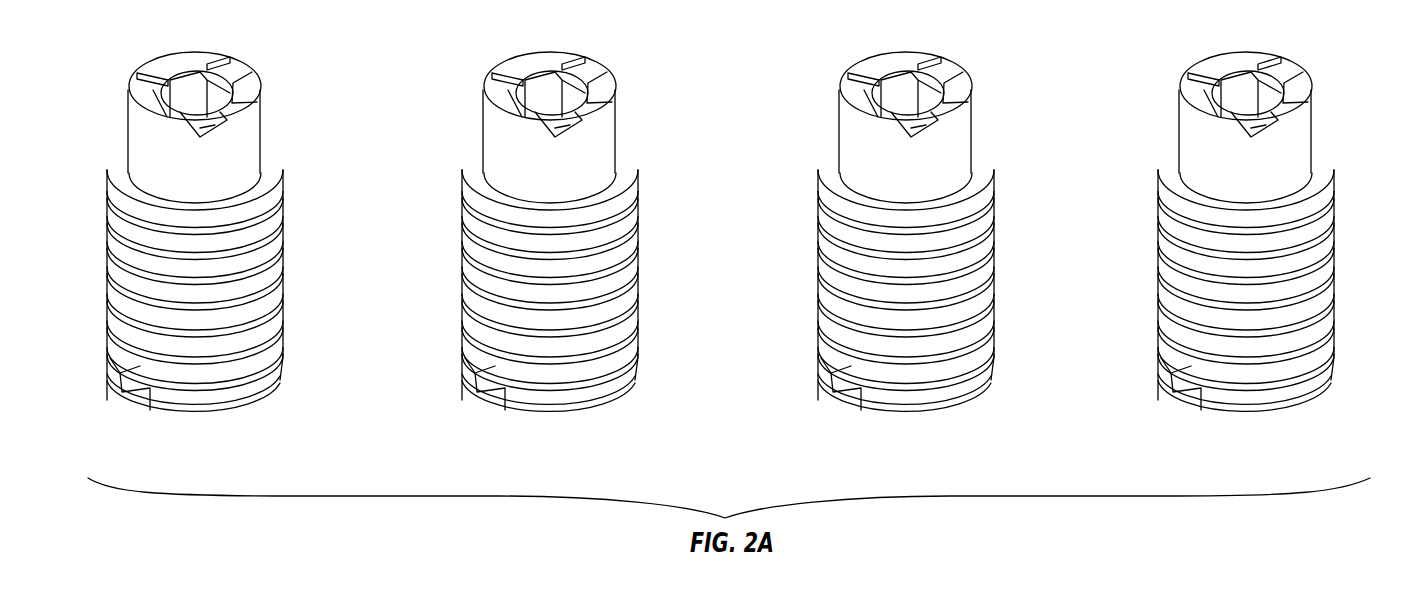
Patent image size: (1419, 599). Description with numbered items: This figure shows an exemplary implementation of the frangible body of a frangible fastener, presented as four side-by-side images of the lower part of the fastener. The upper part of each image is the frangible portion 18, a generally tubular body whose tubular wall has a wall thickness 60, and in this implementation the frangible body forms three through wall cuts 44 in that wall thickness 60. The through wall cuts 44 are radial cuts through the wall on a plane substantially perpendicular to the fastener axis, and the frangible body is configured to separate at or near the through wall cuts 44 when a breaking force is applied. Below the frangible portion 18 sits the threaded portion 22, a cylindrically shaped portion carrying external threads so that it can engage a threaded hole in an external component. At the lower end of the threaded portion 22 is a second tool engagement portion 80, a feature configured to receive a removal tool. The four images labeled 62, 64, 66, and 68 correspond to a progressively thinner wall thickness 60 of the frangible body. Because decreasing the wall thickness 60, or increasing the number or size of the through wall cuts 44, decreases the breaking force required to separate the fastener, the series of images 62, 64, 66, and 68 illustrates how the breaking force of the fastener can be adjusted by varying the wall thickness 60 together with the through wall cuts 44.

The frangible portion 18 is at (265, 66).
The wall thickness 60 is at (247, 101).
The through wall cuts 44 is at (212, 126).
The threaded portion 22 is at (284, 316).
The second tool engagement portion 80 is at (150, 397).
The image of frangible body with first wall thickness 62 is at (241, 424).
The image of frangible body with second wall thickness 64 is at (596, 424).
The image of frangible body with third wall thickness 66 is at (951, 424).
The image of frangible body with fourth wall thickness 68 is at (1291, 424).